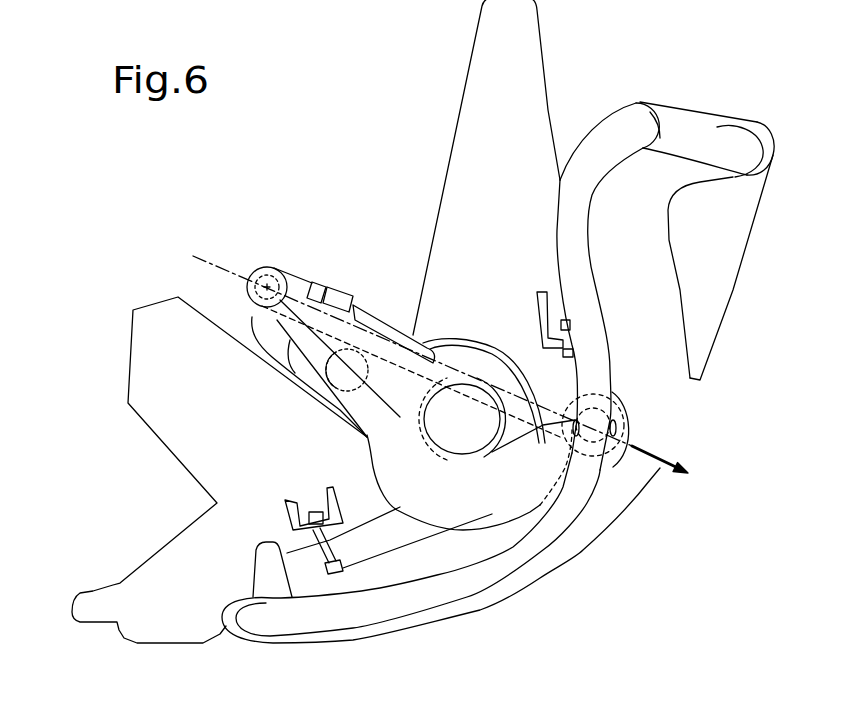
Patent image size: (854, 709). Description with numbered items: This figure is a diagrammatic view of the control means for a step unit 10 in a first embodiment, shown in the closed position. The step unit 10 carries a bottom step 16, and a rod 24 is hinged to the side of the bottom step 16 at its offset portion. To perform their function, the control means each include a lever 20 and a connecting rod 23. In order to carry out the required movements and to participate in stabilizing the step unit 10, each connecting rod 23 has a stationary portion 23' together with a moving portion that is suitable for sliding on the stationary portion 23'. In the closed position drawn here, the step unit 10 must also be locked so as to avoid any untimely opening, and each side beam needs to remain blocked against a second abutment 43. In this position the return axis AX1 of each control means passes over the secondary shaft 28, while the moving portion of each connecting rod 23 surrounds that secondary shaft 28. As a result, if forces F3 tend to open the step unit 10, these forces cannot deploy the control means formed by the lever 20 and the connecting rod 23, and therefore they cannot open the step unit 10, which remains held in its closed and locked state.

The step unit 10 is at (372, 125).
The rod 24 is at (598, 145).
The bottom step 16 is at (467, 592).
The lever 20 is at (265, 314).
The stationary portion 23' is at (370, 277).
The return axis AX1 is at (193, 255).
The secondary shaft 28 is at (456, 395).
The connecting rod 23 is at (498, 504).
The second abutment 43 is at (285, 513).
The forces F3 is at (675, 455).